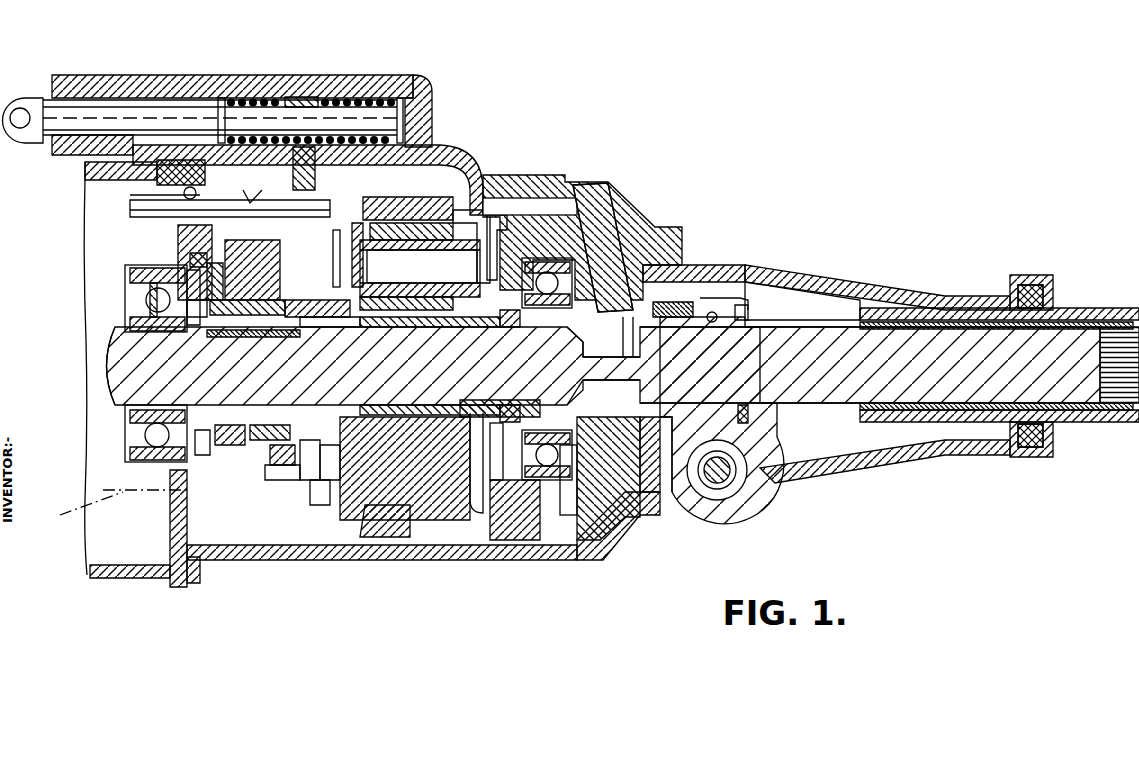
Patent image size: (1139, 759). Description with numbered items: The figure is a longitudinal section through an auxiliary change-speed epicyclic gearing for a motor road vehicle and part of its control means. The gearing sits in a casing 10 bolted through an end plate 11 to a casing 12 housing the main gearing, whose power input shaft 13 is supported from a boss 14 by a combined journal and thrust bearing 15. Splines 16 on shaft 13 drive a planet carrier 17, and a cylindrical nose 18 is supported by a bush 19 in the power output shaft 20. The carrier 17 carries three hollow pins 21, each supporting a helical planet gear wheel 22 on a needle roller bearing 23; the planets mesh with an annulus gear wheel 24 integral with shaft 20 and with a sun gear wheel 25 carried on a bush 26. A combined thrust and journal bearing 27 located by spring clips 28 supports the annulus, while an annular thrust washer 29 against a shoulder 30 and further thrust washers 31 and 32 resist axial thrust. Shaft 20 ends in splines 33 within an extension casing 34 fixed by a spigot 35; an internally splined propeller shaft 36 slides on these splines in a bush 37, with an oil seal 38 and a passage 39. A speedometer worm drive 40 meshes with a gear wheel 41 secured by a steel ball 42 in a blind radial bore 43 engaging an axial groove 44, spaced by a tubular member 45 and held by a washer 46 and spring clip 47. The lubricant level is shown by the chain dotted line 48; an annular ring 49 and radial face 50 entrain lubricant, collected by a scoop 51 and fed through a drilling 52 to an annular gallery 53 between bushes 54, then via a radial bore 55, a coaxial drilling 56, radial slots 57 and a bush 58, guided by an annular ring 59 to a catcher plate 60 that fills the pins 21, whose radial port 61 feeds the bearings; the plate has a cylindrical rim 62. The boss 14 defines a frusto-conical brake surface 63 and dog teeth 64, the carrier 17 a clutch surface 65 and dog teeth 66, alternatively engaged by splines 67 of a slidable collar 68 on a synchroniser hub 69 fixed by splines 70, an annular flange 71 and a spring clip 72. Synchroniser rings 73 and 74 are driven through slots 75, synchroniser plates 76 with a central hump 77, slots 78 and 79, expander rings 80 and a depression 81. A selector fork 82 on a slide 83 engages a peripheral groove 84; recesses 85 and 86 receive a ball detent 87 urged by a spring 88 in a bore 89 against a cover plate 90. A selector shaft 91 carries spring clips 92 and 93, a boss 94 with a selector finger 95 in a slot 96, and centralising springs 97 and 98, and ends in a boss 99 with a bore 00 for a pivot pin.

The casing 10 is at (625, 215).
The end plate 11 is at (183, 582).
The casing 12 is at (97, 580).
The power input shaft 13 is at (123, 385).
The boss 14 is at (122, 273).
The combined journal and thrust bearing 15 is at (122, 298).
The splines 16 is at (467, 417).
The planet carrier 17 is at (428, 503).
The cylindrical nose 18 is at (578, 372).
The bush 19 is at (597, 415).
The power output shaft 20 is at (748, 387).
The hollow pins 21 is at (450, 247).
The planet gear wheel 22 is at (443, 222).
The needle roller bearing 23 is at (395, 248).
The annulus gear wheel 24 is at (407, 205).
The sun gear wheel 25 is at (400, 420).
The bush 26 is at (260, 397).
The combined thrust and journal bearing 27 is at (487, 385).
The spring clips 28 is at (566, 476).
The annular thrust washer 29 is at (123, 437).
The shoulder 30 is at (112, 340).
The annular thrust washer 31 is at (442, 420).
The annular thrust washer 32 is at (570, 373).
The splines 33 is at (803, 327).
The extension casing 34 is at (815, 458).
The spigot 35 is at (650, 470).
The propeller shaft 36 is at (1112, 320).
The bush 37 is at (915, 296).
The oil seal 38 is at (1047, 294).
The passage 39 is at (978, 430).
The speedometer worm drive 40 is at (727, 467).
The gear wheel 41 is at (718, 283).
The steel ball 42 is at (748, 290).
The blind radial bore 43 is at (713, 323).
The axial groove 44 is at (750, 312).
The tubular member 45 is at (670, 510).
The washer 46 is at (752, 440).
The spring clip 47 is at (748, 418).
The chain dotted line 48 is at (111, 510).
The annular ring 49 is at (565, 540).
The radial face 50 is at (520, 533).
The scoop 51 is at (530, 197).
The drilling 52 is at (595, 190).
The annular gallery 53 is at (680, 300).
The bushes 54 is at (590, 455).
The radial bore 55 is at (633, 344).
The coaxial drilling 56 is at (623, 372).
The radial slots 57 is at (525, 392).
The bush 58 is at (442, 345).
The annular ring 59 is at (410, 335).
The catcher plate 60 is at (500, 220).
The radial port 61 is at (405, 287).
The cylindrical rim 62 is at (480, 210).
The frusto-conical brake surface 63 is at (122, 315).
The dog teeth 64 is at (174, 260).
The frusto-conical clutch surface 65 is at (352, 223).
The dog teeth 66 is at (340, 240).
The splines 67 is at (327, 515).
The axially slidable collar 68 is at (275, 497).
The synchroniser hub 69 is at (228, 267).
The splines 70 is at (213, 397).
The annular flange 71 is at (287, 397).
The spring clip 72 is at (185, 390).
The synchroniser ring 73 is at (170, 268).
The synchroniser ring 74 is at (303, 497).
The slots 75 is at (265, 480).
The synchroniser plate 76 is at (240, 467).
The central hump 77 is at (247, 455).
The slots 78 is at (235, 397).
The slots 79 is at (310, 400).
The expander rings 80 is at (226, 267).
The depression 81 is at (293, 493).
The selector fork 82 is at (292, 215).
The axially movable slide 83 is at (117, 230).
The peripheral groove 84 is at (315, 513).
The recess 85 is at (157, 213).
The recess 86 is at (248, 205).
The ball detent 87 is at (140, 193).
The compression coil spring 88 is at (137, 183).
The bore 89 is at (97, 187).
The cover plate 90 is at (283, 77).
The selector shaft 91 is at (80, 83).
The spring clip 92 is at (217, 98).
The spring clip 93 is at (400, 95).
The boss 94 is at (307, 98).
The selector finger 95 is at (420, 162).
The slot 96 is at (312, 188).
The compression coil spring 97 is at (250, 100).
The compression coil spring 98 is at (355, 100).
The boss 99 is at (33, 105).
The bore 00 is at (17, 128).